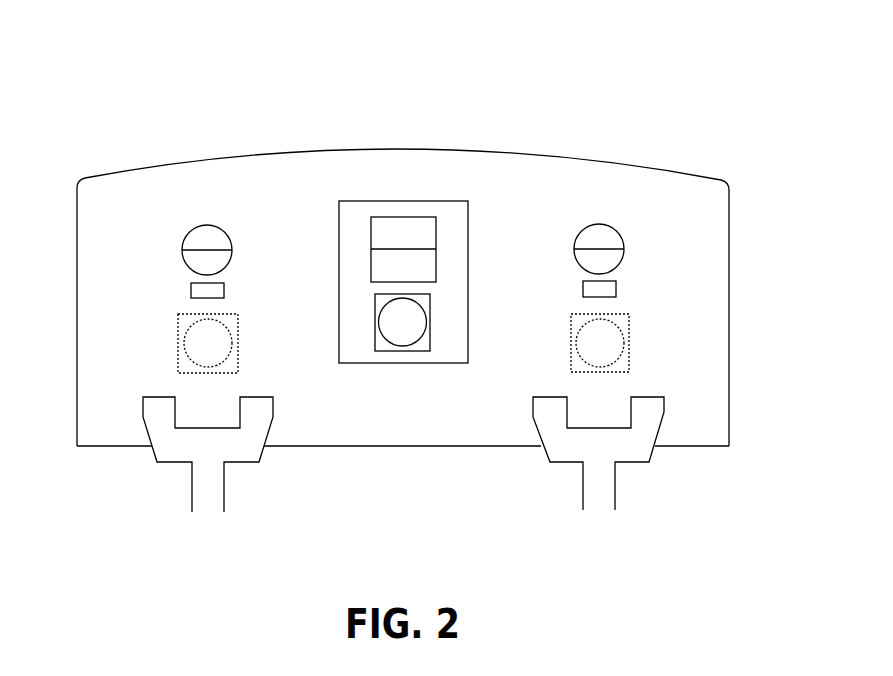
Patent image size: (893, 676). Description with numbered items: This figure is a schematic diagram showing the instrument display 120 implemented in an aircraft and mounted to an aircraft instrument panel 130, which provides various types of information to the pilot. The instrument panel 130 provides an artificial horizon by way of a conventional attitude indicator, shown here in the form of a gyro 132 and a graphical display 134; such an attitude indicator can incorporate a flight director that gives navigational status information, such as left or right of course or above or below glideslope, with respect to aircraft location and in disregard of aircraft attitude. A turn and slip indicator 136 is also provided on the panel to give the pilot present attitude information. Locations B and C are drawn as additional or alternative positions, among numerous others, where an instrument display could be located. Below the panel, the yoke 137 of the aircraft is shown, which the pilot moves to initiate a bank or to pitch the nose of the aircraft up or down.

The instrument panel 130 is at (583, 140).
The gyro 132 is at (228, 222).
The display 134 is at (438, 213).
The instrument display 120 is at (440, 290).
The turn and slip indicator 136 is at (623, 288).
The yoke 137 is at (142, 463).
The location B is at (166, 339).
The location C is at (640, 338).